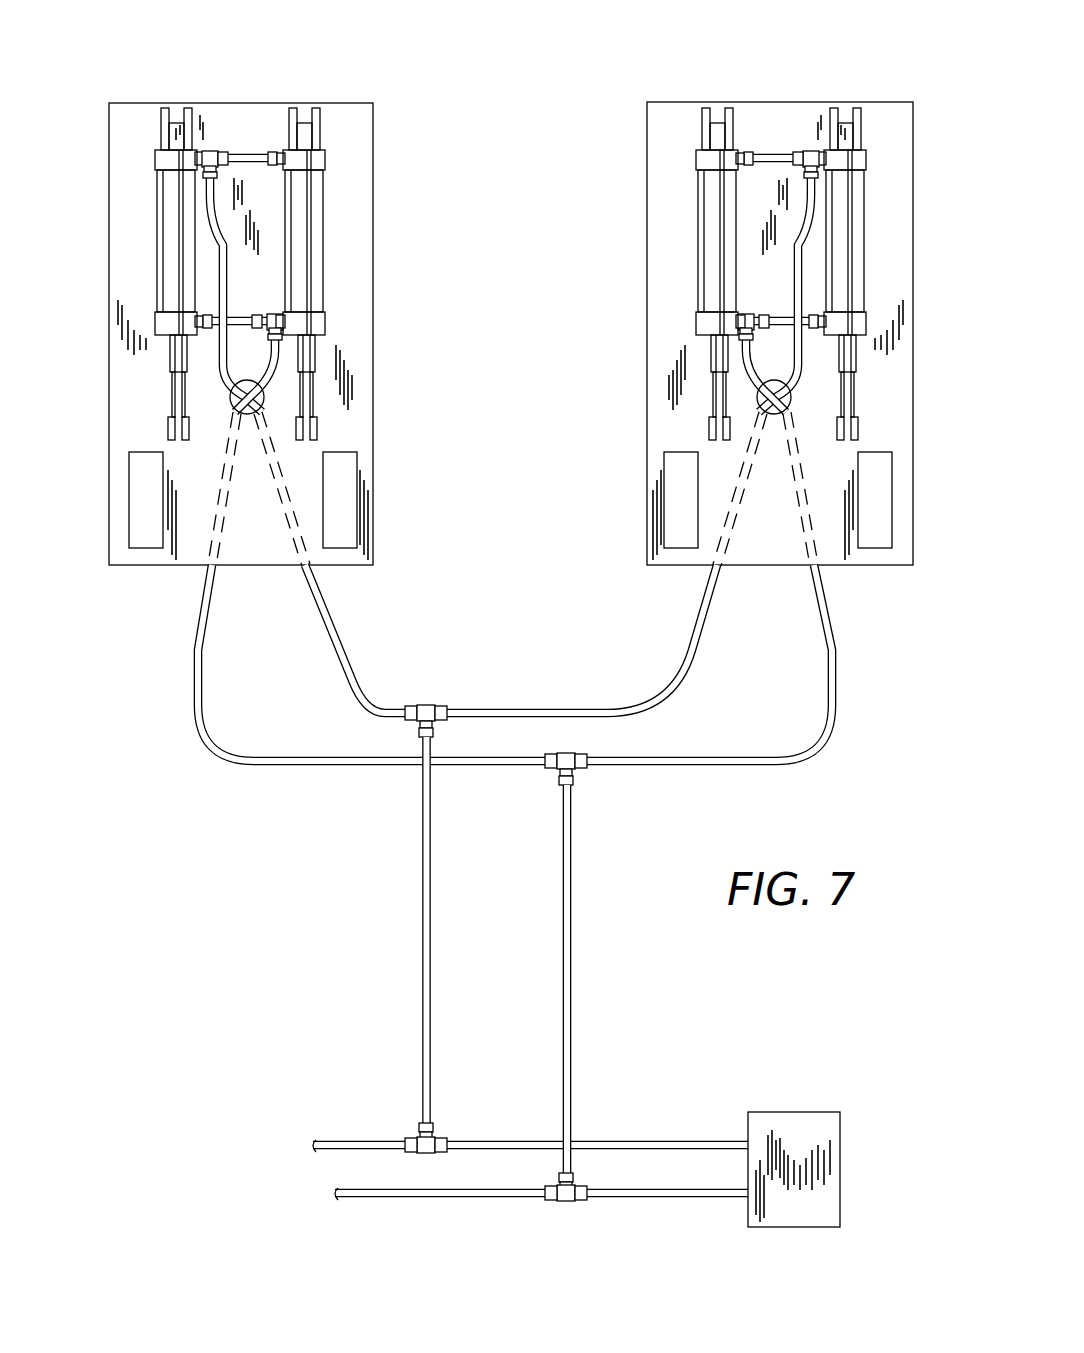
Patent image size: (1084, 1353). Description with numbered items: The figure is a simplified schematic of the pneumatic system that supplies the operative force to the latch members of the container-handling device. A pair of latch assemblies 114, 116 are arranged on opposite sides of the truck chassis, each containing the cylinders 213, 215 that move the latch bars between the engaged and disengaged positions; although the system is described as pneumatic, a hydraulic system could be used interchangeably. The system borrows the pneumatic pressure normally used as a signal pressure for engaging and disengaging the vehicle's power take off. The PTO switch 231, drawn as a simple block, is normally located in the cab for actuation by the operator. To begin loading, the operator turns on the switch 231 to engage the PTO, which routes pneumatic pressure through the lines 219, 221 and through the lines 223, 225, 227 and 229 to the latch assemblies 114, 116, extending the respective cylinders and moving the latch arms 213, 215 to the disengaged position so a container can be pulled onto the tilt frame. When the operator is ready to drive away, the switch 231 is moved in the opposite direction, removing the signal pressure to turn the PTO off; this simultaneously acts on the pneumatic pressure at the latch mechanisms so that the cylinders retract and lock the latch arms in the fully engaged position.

The latch assembly 114 is at (732, 298).
The latch assembly 116 is at (264, 60).
The cylinder 213 is at (853, 258).
The cylinder 215 is at (700, 258).
The line 219 is at (423, 918).
The line 221 is at (566, 930).
The line 223 is at (199, 716).
The line 225 is at (333, 642).
The line 227 is at (690, 638).
The line 229 is at (835, 647).
The PTO switch 231 is at (818, 1140).